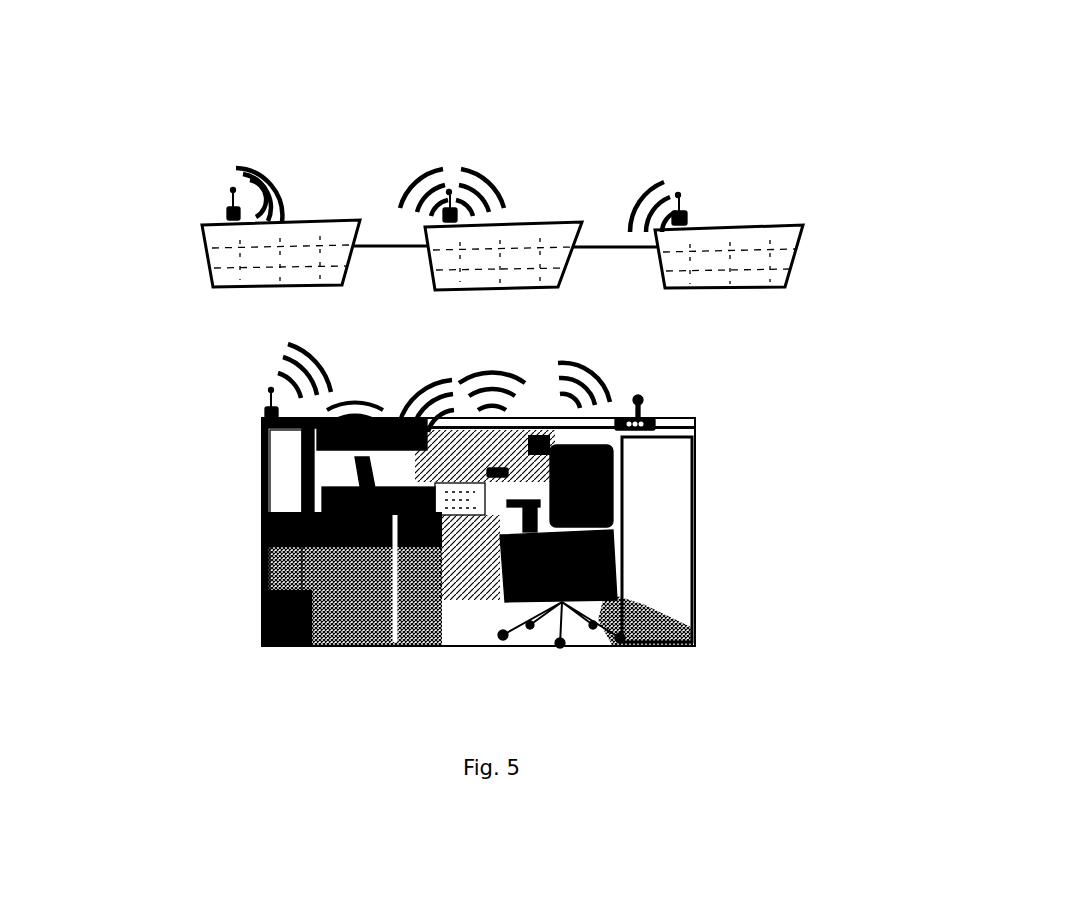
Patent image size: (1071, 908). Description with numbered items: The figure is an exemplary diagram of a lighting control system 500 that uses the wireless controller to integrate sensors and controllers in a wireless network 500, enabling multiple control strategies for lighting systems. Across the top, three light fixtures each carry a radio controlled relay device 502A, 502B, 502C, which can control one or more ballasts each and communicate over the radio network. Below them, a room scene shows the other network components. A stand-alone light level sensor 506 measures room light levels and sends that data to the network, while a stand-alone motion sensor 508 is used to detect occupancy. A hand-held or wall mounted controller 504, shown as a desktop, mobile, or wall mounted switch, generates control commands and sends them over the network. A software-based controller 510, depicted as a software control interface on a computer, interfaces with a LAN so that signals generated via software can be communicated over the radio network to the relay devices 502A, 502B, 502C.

The lighting control system 500 is at (732, 63).
The radio controlled relay device 502A is at (233, 188).
The radio controlled relay device 502B is at (449, 190).
The radio controlled relay device 502C is at (678, 193).
The hand-held or wall mounted controller 504 is at (532, 472).
The stand-alone light level sensor 506 is at (250, 398).
The stand-alone motion sensor 508 is at (674, 406).
The software-based controller 510 is at (342, 491).